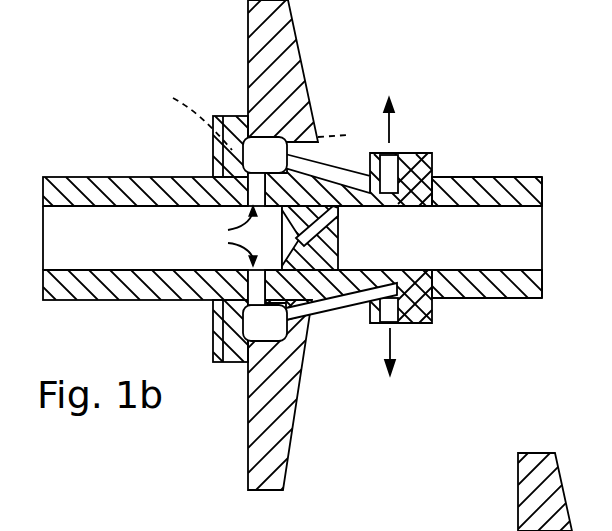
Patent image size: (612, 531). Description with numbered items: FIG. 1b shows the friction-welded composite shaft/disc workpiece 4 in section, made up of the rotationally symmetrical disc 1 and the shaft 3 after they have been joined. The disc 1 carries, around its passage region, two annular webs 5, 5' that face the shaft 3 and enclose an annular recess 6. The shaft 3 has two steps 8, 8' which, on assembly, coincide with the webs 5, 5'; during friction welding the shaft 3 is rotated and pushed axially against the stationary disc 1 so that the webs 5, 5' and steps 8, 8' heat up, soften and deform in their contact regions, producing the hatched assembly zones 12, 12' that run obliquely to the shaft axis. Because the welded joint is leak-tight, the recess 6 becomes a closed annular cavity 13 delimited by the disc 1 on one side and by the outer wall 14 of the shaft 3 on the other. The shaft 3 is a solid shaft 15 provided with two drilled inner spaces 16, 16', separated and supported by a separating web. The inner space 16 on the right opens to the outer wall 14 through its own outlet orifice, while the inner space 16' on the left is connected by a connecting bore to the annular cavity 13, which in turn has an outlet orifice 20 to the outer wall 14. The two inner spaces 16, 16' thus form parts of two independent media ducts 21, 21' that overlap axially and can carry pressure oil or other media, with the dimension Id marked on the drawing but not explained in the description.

The disc 1 is at (526, 469).
The shaft 3 is at (526, 190).
The composite shaft/disc workpiece 4 is at (473, 373).
The annular web 5 is at (220, 183).
The annular web 5' is at (348, 208).
The annular recess 6 is at (303, 122).
The step 8 is at (194, 117).
The step 8' is at (344, 136).
The assembly zone 12 is at (204, 331).
The clamping segment 12' is at (299, 245).
The closed annular cavity 13 is at (246, 116).
The outer wall 14 is at (117, 177).
The solid shaft 15 is at (503, 188).
The inner space 16 is at (440, 315).
The inner space 16' is at (145, 306).
The outlet orifice 20 is at (368, 155).
The media duct 21 is at (401, 194).
The media duct 21' is at (245, 241).
The inner diameter Id is at (210, 158).